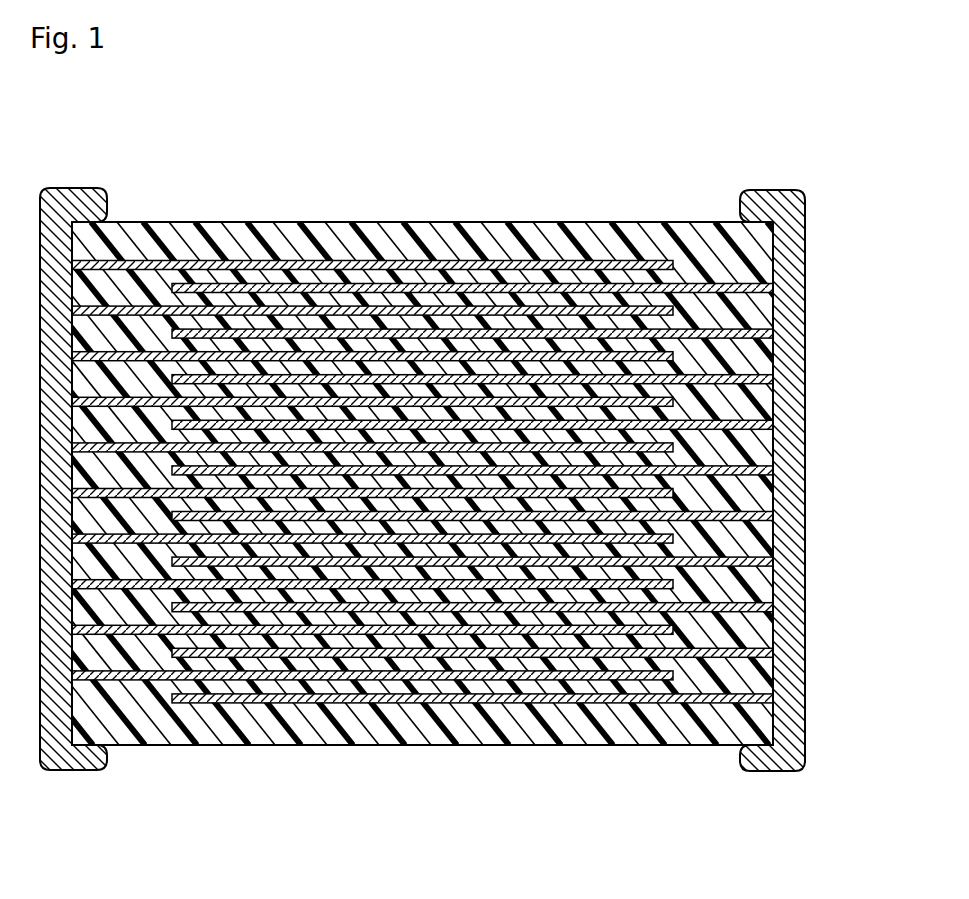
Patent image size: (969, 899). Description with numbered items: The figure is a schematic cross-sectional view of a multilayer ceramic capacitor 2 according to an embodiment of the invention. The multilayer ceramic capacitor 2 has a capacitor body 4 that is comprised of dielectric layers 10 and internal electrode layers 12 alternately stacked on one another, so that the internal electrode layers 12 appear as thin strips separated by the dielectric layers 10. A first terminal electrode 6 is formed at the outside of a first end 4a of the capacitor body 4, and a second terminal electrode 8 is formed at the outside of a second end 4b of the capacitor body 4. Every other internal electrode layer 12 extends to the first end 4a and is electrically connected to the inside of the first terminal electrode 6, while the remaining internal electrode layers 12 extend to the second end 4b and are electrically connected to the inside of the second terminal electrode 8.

The multilayer ceramic capacitor 2 is at (288, 776).
The capacitor body 4 is at (621, 745).
The first end 4a is at (40, 222).
The second end 4b is at (808, 590).
The first terminal electrode 6 is at (65, 742).
The second terminal electrode 8 is at (767, 192).
The dielectric layers 10 is at (348, 262).
The internal electrode layers 12 is at (462, 245).